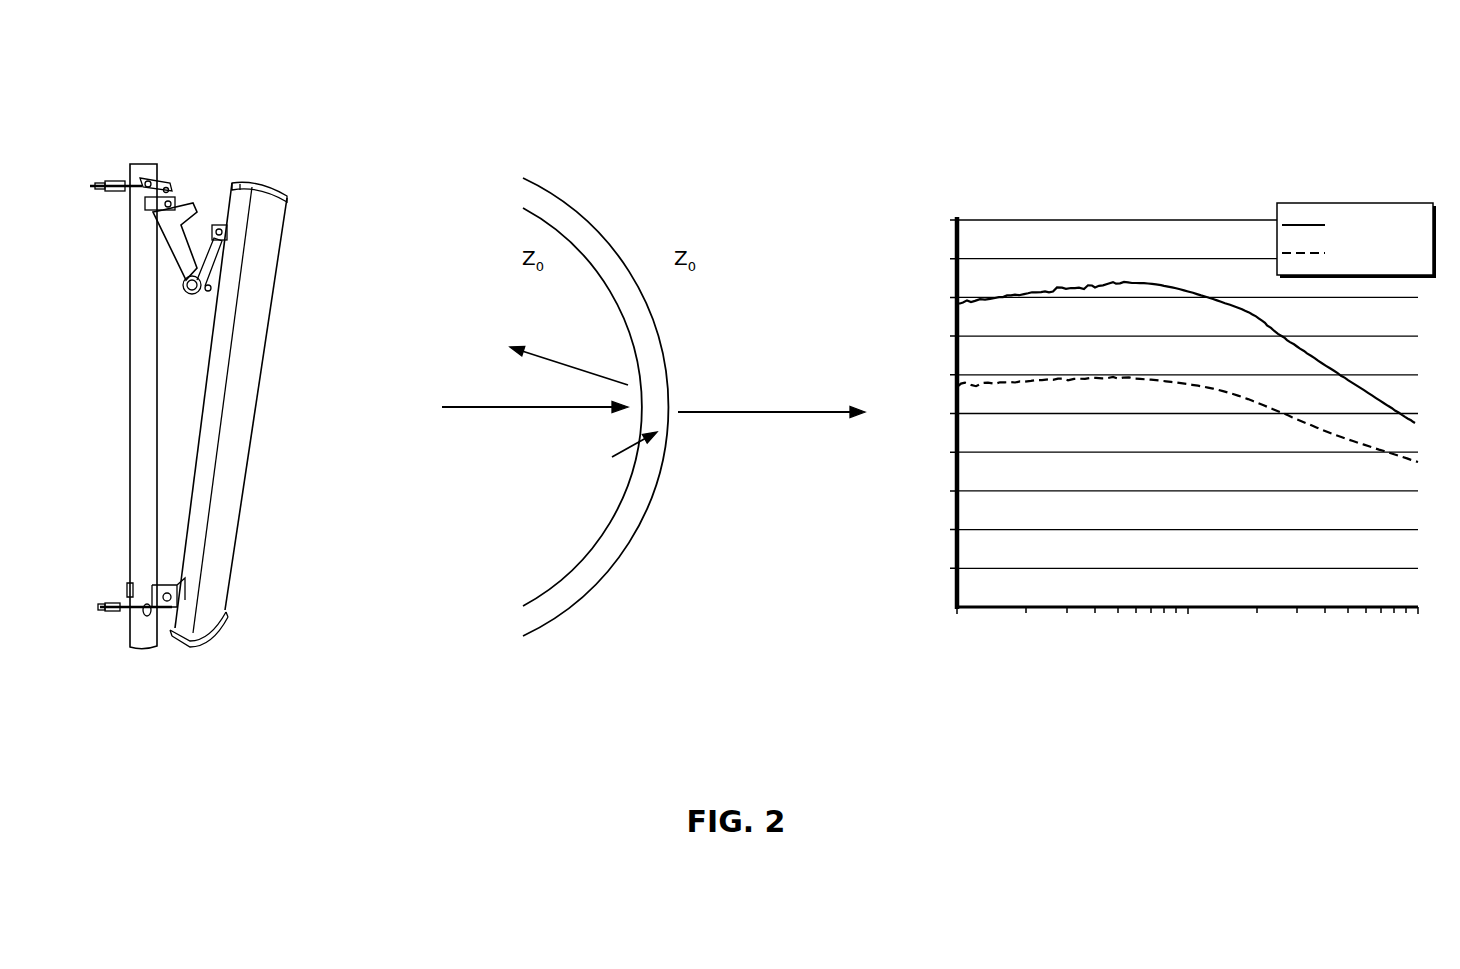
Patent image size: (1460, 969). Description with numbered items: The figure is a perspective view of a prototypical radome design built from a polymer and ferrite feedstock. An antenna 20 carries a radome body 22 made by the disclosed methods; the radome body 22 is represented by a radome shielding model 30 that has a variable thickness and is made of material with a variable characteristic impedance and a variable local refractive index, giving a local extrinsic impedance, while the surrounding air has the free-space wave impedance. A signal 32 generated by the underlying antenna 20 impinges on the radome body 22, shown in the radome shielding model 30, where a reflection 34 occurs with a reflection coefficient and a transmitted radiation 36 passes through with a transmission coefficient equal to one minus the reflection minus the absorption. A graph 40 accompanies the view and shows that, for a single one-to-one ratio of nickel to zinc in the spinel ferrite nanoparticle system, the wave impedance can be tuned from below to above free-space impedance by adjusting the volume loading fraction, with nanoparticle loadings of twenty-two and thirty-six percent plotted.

The antenna 20 is at (253, 180).
The radome body 22 is at (243, 477).
The radome shielding model 30 is at (613, 233).
The signal 32 is at (502, 408).
The reflection 34 is at (567, 360).
The transmitted radiation 36 is at (748, 412).
The graph 40 is at (1047, 220).